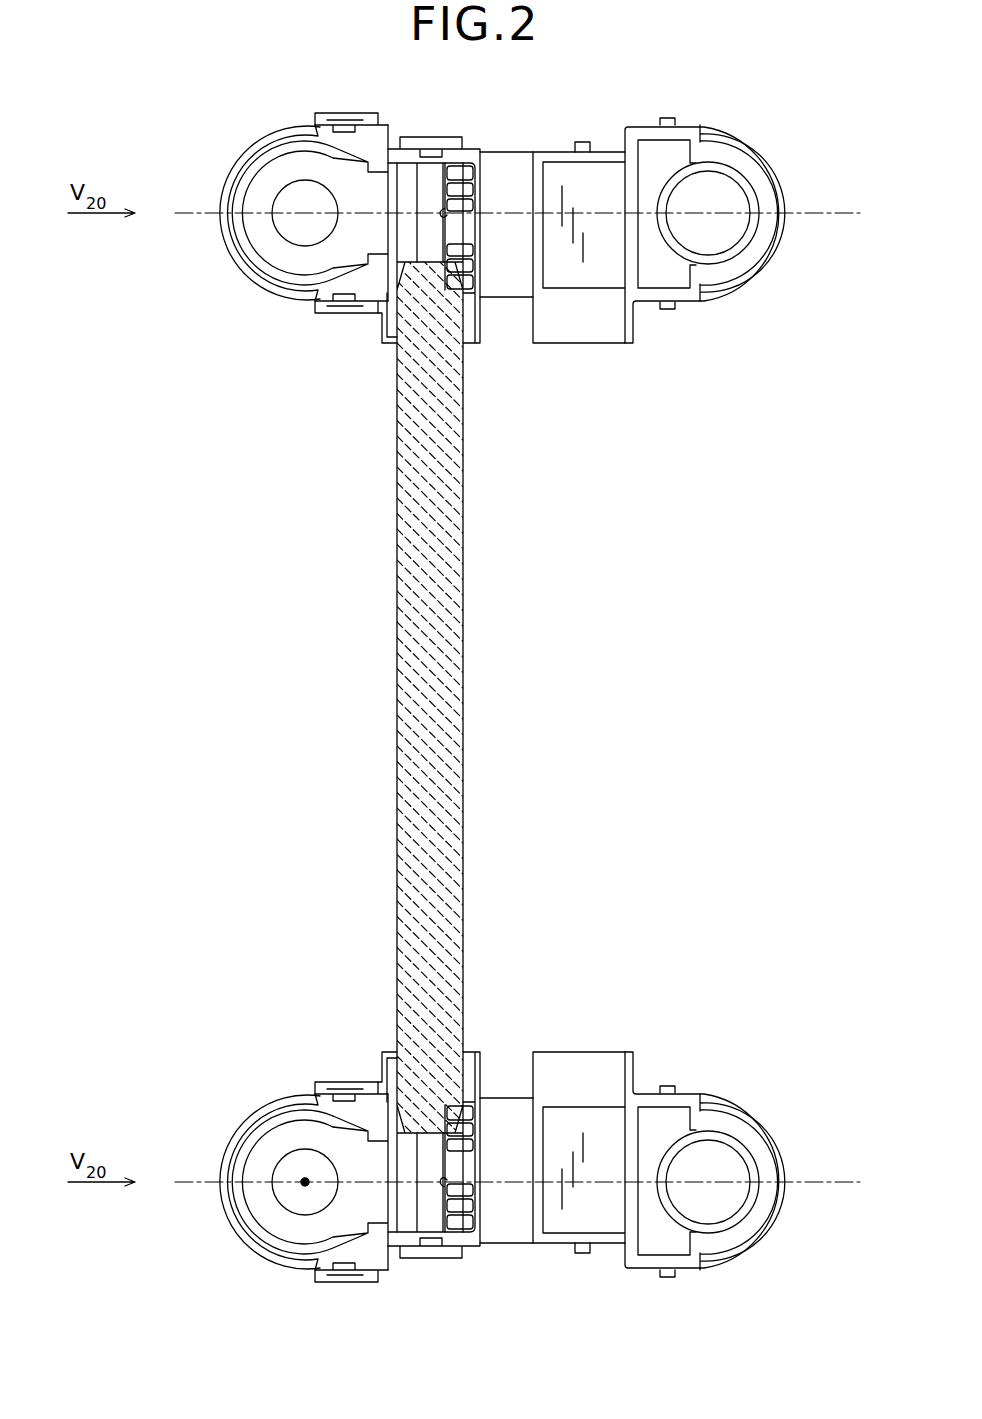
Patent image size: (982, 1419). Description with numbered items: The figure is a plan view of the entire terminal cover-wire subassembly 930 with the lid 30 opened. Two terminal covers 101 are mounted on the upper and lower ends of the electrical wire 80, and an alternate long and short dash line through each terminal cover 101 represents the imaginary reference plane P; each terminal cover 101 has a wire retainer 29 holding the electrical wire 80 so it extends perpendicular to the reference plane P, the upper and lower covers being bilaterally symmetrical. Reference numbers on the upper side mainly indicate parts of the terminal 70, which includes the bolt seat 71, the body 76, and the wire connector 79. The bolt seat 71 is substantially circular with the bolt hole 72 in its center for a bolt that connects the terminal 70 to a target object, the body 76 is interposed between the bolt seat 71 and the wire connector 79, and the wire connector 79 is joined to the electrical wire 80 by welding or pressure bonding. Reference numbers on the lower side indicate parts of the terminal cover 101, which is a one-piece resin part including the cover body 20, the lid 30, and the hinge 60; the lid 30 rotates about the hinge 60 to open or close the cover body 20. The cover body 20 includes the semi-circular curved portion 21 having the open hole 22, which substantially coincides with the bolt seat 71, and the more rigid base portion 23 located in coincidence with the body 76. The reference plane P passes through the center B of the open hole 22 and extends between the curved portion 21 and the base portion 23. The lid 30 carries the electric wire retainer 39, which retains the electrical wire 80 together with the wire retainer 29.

The cover body 20 is at (381, 1301).
The curved portion 21 is at (233, 1130).
The open hole 22 is at (285, 1118).
The base portion 23 is at (347, 1063).
The wire retainer 29 is at (478, 1055).
The lid 30 is at (619, 1290).
The electric wire retainer 39 is at (590, 1070).
The hinge 60 is at (509, 1223).
The terminal 70 is at (267, 179).
The bolt seat 71 is at (322, 172).
The bolt hole 72 is at (294, 225).
The body 76 is at (373, 198).
The wire connector 79 is at (436, 207).
The electrical wire 80 is at (433, 655).
The terminal cover 101 is at (808, 148).
The terminal cover-wire subassembly 930 is at (713, 667).
The reference plane P is at (838, 216).
The center of the open hole B is at (302, 1185).